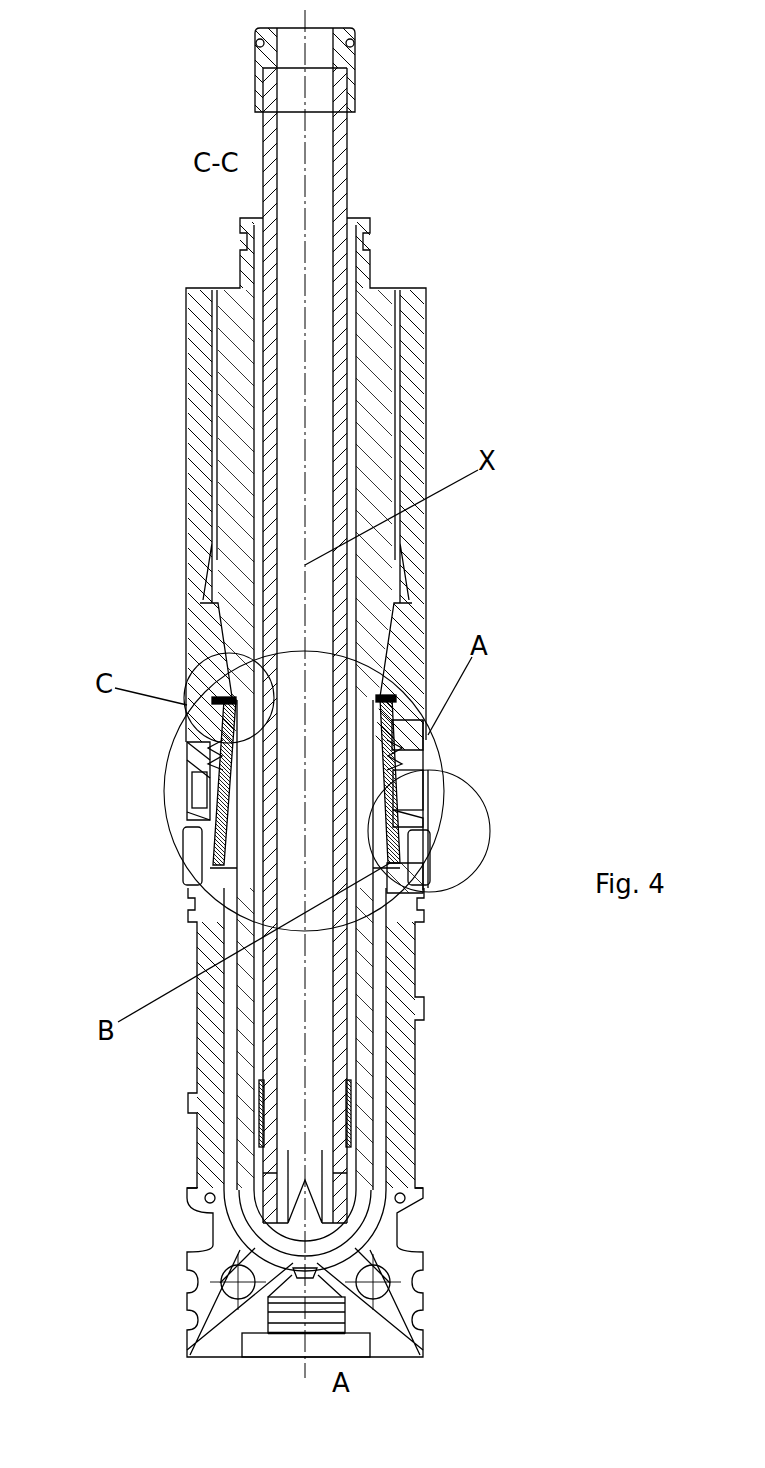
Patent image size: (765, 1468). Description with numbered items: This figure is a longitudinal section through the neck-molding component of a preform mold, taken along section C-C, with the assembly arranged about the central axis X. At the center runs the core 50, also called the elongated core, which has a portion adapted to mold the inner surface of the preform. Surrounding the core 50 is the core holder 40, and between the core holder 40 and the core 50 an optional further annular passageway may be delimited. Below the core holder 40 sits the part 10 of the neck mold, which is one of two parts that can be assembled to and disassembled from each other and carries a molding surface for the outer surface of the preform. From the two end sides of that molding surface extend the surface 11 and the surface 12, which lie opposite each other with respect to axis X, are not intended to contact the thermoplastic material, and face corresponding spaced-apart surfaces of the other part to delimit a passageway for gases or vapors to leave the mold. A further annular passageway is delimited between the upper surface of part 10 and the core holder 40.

The part 10 is at (410, 802).
The surface 11 is at (203, 838).
The surface 12 is at (390, 850).
The core holder 40 is at (413, 483).
The core 50 is at (380, 445).